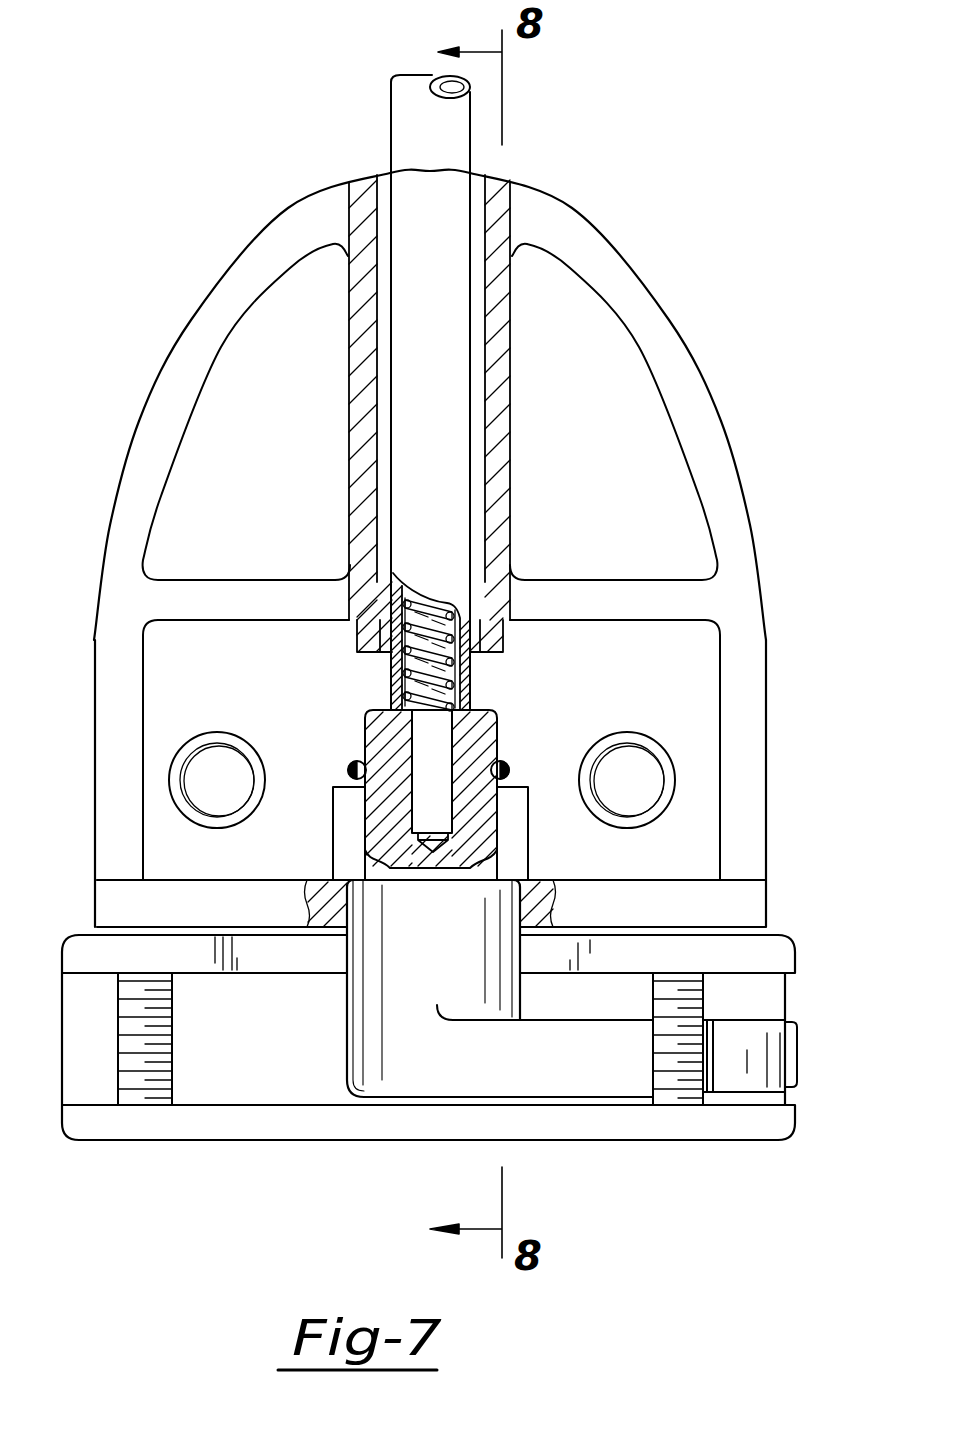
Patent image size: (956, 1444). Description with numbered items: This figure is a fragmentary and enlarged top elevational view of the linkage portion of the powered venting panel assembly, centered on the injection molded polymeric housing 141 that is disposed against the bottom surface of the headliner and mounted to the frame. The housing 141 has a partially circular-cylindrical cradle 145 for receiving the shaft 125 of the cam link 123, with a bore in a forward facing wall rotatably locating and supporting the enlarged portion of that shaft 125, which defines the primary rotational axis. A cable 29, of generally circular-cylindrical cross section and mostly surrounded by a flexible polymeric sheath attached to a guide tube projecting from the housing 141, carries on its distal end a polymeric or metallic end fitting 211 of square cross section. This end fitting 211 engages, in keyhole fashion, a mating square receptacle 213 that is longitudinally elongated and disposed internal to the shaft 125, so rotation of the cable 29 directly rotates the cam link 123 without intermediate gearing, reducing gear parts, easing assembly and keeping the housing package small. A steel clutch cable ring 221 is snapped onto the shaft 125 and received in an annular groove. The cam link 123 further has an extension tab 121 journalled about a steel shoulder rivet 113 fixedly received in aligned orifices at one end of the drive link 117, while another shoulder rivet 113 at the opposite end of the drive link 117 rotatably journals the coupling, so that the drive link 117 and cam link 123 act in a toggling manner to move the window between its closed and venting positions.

The housing 141 is at (748, 728).
The shaft 125 is at (392, 715).
The cable 29 is at (480, 690).
The receptacle 213 is at (420, 737).
The end fitting 211 is at (427, 770).
The clutch cable ring 221 is at (507, 765).
The cradle 145 is at (515, 855).
The drive link 117 is at (762, 958).
The shoulder rivet 113 is at (735, 1168).
The cam link 123 is at (373, 995).
The extension tab 121 is at (622, 1078).